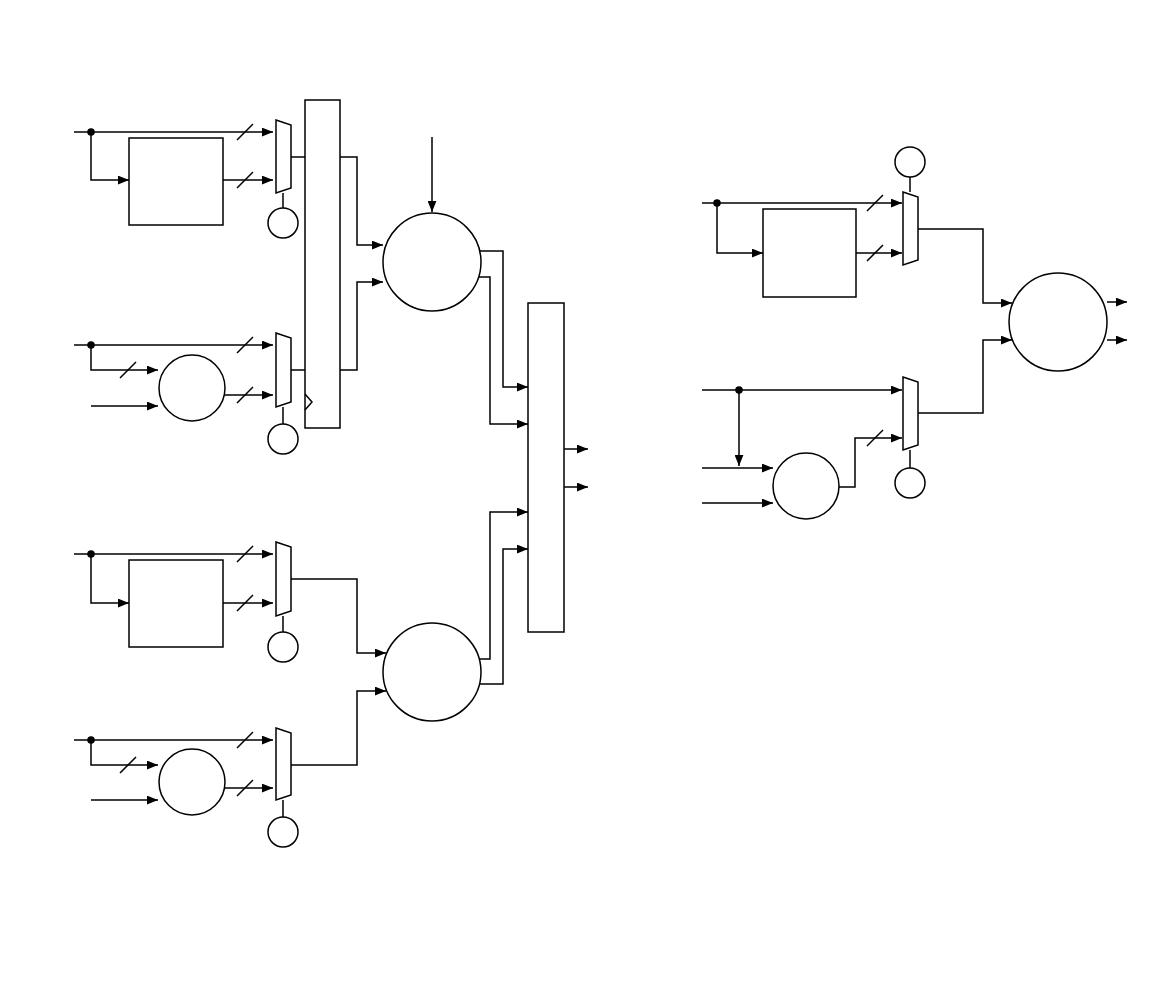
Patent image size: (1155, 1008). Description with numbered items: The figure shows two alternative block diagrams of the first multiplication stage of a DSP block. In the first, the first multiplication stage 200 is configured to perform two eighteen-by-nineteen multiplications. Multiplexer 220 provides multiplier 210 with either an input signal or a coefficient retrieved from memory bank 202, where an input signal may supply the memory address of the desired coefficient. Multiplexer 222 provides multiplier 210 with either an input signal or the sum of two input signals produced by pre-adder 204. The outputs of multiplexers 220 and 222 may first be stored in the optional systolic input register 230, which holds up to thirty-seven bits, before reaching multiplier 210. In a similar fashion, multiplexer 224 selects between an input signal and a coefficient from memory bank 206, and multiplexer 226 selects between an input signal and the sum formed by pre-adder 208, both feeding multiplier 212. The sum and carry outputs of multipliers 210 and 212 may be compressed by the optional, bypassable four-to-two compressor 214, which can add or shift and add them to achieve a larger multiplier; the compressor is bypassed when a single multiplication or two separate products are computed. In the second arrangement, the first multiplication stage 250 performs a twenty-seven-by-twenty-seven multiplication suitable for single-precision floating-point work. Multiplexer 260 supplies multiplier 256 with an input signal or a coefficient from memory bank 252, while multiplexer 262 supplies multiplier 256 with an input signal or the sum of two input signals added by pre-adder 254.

In FIG. 2A, the first multiplication stage 200 is at (495, 112).
In FIG. 2A, the memory bank 202 is at (163, 225).
In FIG. 2A, the pre-adder 204 is at (190, 421).
In FIG. 2A, the memory bank 206 is at (175, 647).
In FIG. 2A, the pre-adder 208 is at (190, 815).
In FIG. 2A, the multiplier 210 is at (445, 215).
In FIG. 2A, the multiplier 212 is at (432, 720).
In FIG. 2A, the 4:2 compressor 214 is at (548, 303).
In FIG. 2A, the multiplexer 220 is at (283, 120).
In FIG. 2A, the multiplexer 222 is at (283, 333).
In FIG. 2A, the multiplexer 224 is at (283, 542).
In FIG. 2A, the multiplexer 226 is at (292, 782).
In FIG. 2A, the systolic input register 230 is at (325, 100).
In FIG. 2B, the first multiplication stage 250 is at (1045, 113).
In FIG. 2B, the memory bank 252 is at (810, 297).
In FIG. 2B, the pre-adder 254 is at (806, 519).
In FIG. 2B, the multiplier 256 is at (1060, 272).
In FIG. 2B, the multiplexer 260 is at (919, 212).
In FIG. 2B, the multiplexer 262 is at (919, 428).